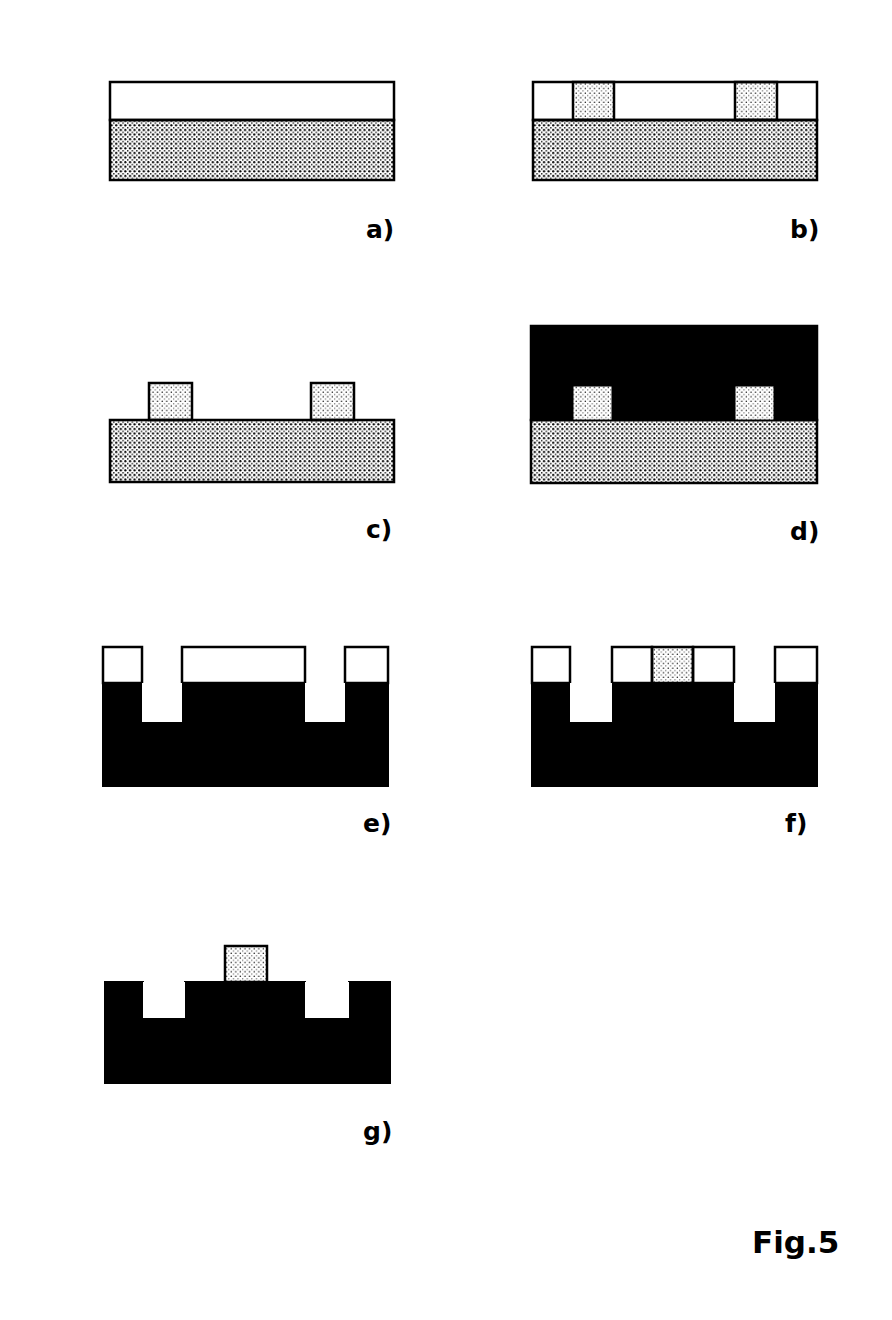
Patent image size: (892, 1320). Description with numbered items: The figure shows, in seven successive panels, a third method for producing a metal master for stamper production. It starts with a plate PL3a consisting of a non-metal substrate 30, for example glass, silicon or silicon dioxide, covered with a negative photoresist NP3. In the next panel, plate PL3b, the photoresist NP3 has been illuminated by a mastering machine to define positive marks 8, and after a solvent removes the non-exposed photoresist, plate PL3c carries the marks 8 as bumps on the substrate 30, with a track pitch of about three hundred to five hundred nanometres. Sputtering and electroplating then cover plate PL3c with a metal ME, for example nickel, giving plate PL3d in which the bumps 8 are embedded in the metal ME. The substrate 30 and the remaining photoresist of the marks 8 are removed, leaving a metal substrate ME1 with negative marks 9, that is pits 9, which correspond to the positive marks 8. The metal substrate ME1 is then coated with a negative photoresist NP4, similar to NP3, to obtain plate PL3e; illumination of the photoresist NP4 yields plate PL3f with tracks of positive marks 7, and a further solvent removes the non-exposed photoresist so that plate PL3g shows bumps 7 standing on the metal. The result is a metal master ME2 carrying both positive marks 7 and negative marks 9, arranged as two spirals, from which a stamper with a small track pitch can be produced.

The negative photoresist NP3 is at (125, 100).
The non-metal substrate 30 is at (117, 148).
The positive marks 8 is at (463, 251).
The metal ME is at (530, 358).
The negative photoresist NP4 is at (118, 665).
The metal substrate ME1 is at (103, 737).
The negative marks 9 is at (458, 854).
The positive marks 7 is at (459, 814).
The metal master ME2 is at (107, 1035).
The plate PL3a is at (138, 185).
The plate PL3b is at (560, 188).
The plate PL3c is at (140, 487).
The plate PL3d is at (560, 488).
The plate PL3e is at (122, 790).
The plate PL3f is at (545, 795).
The plate PL3g is at (122, 1098).